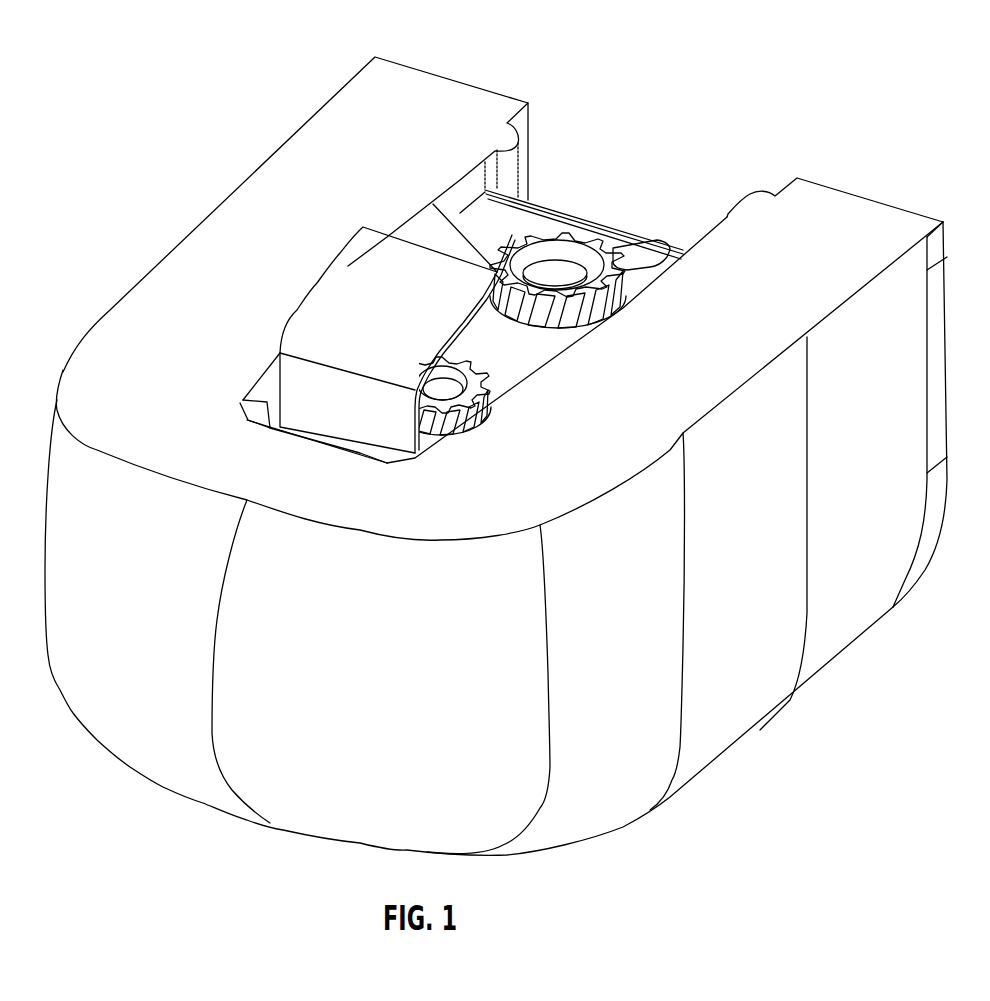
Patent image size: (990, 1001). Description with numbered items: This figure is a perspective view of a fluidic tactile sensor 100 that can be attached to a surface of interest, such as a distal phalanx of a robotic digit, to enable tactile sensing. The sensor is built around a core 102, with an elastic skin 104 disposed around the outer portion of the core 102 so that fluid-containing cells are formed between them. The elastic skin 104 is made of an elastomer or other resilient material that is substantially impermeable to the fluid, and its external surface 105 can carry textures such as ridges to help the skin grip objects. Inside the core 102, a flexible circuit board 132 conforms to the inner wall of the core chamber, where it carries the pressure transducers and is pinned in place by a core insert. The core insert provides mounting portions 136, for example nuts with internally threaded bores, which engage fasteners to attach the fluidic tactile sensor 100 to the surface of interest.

The fluidic tactile sensor 100 is at (580, 80).
The core 102 is at (575, 230).
The elastic skin 104 is at (350, 107).
The external surface 105 is at (747, 728).
The flexible circuit board 132 is at (320, 287).
The mounting portions 136 is at (610, 253).